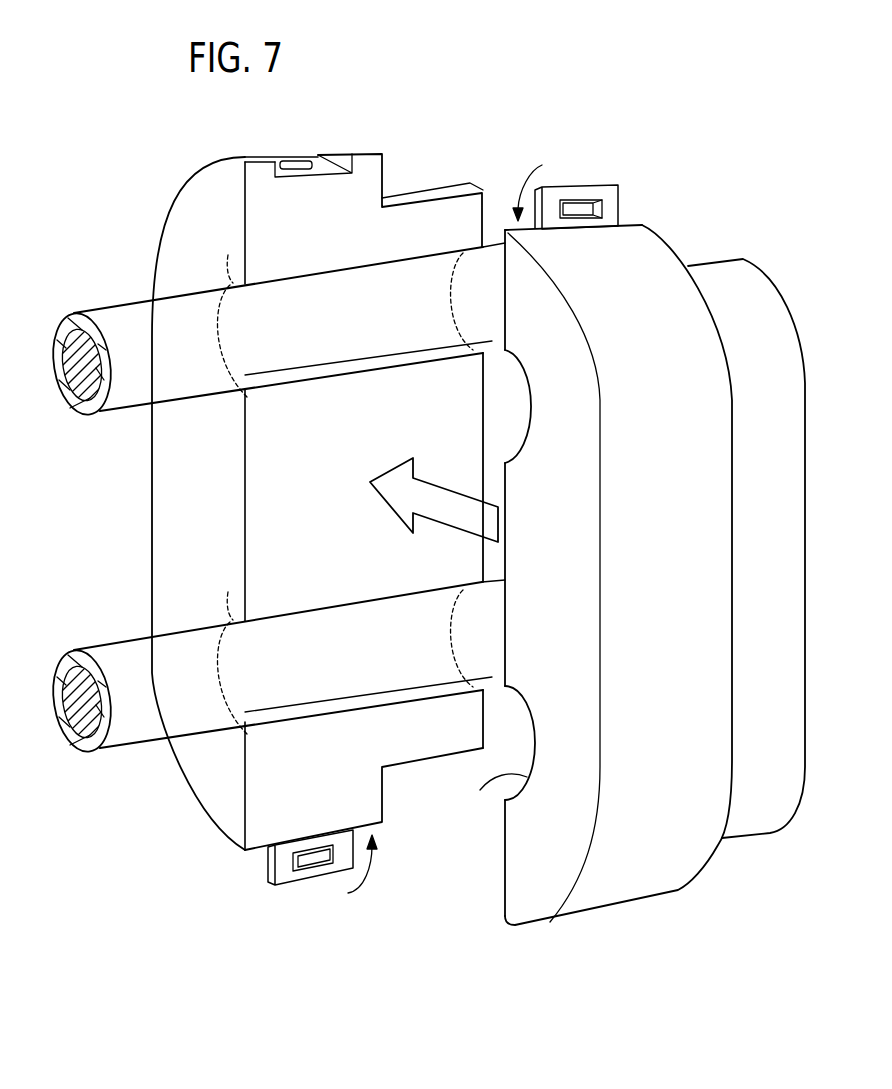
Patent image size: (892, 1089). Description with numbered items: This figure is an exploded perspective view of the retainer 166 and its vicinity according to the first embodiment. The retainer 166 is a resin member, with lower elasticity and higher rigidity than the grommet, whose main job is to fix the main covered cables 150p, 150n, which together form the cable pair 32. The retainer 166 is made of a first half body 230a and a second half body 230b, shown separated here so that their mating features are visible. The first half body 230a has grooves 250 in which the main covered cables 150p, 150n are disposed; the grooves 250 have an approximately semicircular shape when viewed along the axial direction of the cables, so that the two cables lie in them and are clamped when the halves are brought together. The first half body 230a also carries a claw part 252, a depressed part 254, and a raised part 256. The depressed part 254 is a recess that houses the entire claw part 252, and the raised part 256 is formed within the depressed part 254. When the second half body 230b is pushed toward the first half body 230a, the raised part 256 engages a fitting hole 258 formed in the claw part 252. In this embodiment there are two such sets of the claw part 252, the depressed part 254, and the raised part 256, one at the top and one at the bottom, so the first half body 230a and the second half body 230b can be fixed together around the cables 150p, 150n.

The retainer 166 is at (167, 188).
The first half body 230a is at (215, 805).
The second half body 230b is at (608, 898).
The grooves 250 is at (233, 282).
The claw part 252 is at (290, 878).
The depressed part 254 is at (327, 165).
The raised part 256 is at (295, 158).
The fitting hole 258 is at (318, 860).
The main covered cables 32 is at (92, 480).
The main covered cable 150p is at (134, 397).
The main covered cable 150n is at (125, 650).